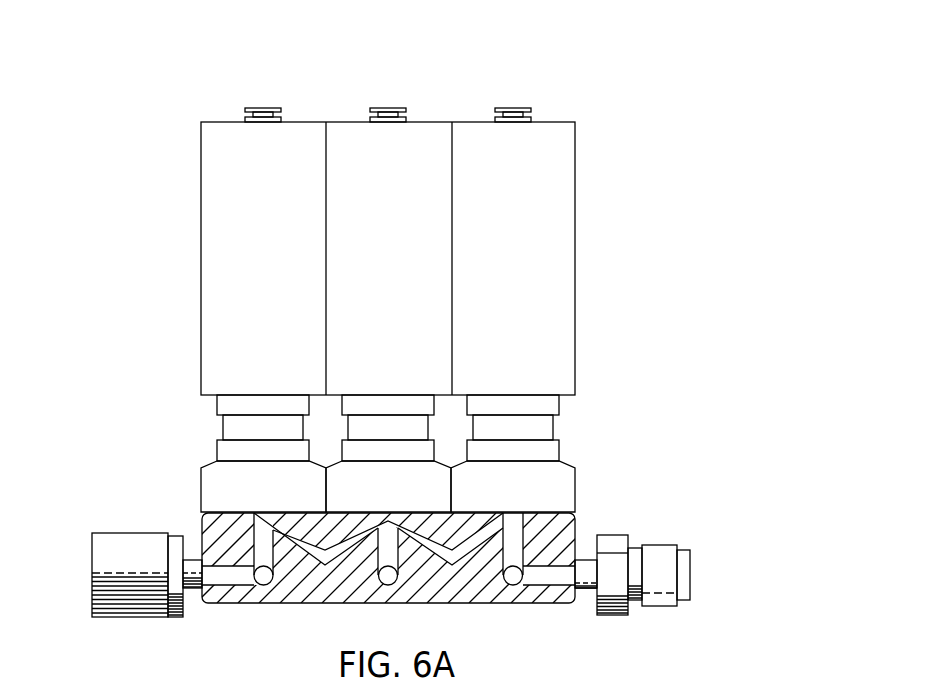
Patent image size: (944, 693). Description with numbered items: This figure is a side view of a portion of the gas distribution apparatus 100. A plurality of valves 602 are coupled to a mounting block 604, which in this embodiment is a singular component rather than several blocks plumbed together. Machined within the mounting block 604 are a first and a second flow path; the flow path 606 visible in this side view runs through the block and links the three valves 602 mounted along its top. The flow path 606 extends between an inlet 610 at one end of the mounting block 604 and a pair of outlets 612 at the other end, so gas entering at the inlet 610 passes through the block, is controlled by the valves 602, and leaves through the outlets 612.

The gas distribution apparatus 100 is at (425, 376).
The valves 602 is at (186, 268).
The mounting block 604 is at (388, 592).
The flow path 606 is at (235, 588).
The inlet 610 is at (122, 532).
The outlets 612 is at (659, 545).